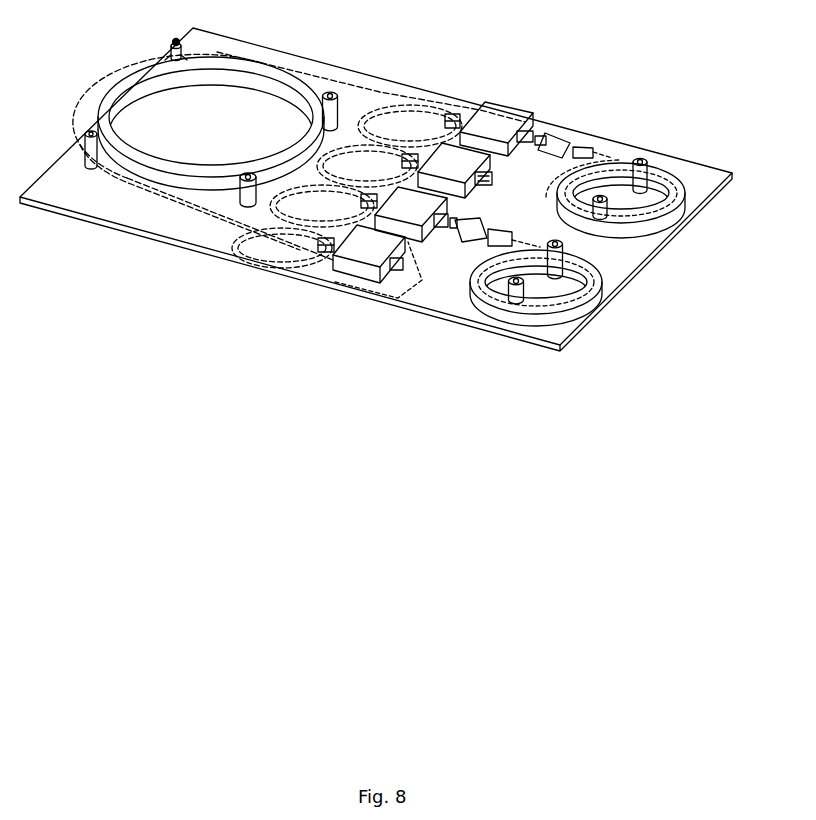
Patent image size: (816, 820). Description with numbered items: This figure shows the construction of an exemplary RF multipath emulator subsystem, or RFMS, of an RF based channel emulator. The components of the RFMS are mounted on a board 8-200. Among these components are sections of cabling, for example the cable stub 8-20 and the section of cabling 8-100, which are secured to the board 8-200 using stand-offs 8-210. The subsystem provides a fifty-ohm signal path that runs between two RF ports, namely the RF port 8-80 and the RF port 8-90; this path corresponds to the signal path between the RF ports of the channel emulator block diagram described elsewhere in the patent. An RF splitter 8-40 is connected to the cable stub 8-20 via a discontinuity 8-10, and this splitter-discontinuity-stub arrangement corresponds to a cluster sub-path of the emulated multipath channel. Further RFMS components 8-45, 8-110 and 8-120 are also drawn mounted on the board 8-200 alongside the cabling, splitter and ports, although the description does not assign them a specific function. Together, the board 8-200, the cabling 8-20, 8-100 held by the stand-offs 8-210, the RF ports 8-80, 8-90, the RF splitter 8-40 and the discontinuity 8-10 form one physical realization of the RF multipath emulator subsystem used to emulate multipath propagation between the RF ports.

The discontinuity 8-10 is at (574, 248).
The cable stub 8-20 is at (588, 318).
The RF splitter 8-40 is at (435, 223).
The module with connector 8-45 is at (503, 120).
The RF port 8-80 is at (492, 178).
The RF port 8-90 is at (393, 297).
The section of cabling 8-100 is at (150, 67).
The module 8-110 is at (457, 157).
The raised platform 8-120 is at (357, 266).
The board 8-200 is at (550, 317).
The stand-offs 8-210 is at (510, 292).